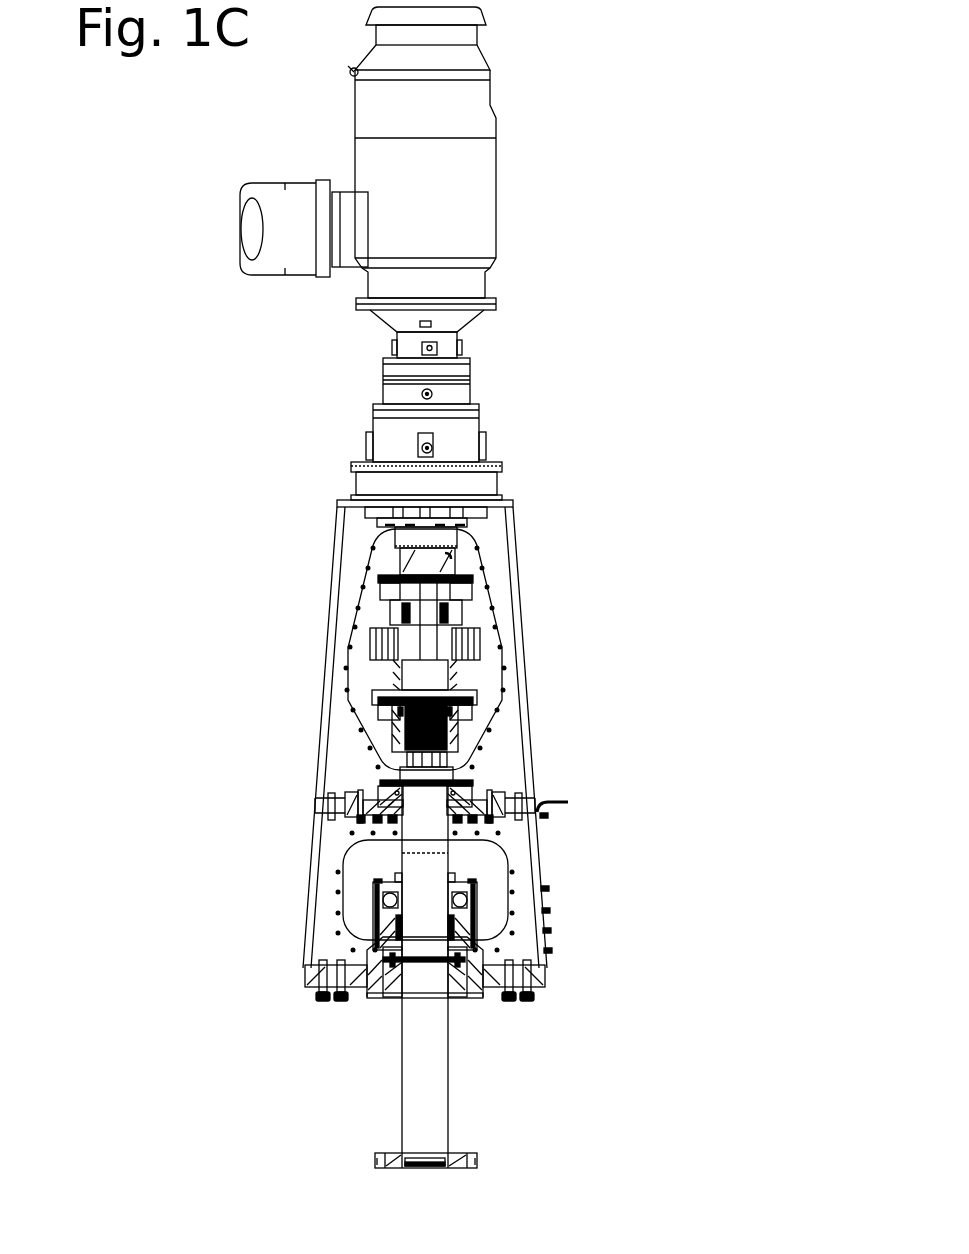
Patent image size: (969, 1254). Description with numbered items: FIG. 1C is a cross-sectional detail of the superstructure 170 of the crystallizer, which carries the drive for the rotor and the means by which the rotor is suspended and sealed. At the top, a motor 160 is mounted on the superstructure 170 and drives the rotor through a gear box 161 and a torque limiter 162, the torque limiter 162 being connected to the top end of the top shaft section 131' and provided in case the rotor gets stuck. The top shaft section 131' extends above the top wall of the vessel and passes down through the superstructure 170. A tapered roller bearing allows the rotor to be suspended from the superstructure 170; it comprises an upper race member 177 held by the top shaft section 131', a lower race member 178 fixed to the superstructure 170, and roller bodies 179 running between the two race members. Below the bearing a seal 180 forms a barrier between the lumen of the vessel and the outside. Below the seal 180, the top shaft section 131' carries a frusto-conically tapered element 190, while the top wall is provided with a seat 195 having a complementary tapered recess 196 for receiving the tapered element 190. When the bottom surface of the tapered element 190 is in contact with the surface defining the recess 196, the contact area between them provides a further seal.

The motor 160 is at (445, 172).
The gear box 161 is at (455, 440).
The torque limiter 162 is at (483, 622).
The superstructure 170 is at (285, 650).
The upper race member 177 is at (473, 785).
The lower race member 178 is at (480, 818).
The roller bodies 179 is at (568, 803).
The top shaft section 131' is at (266, 940).
The seal 180 is at (483, 925).
The frusto-conically tapered element 190 is at (490, 982).
The seat 195 is at (330, 975).
The tapered recess 196 is at (387, 1000).